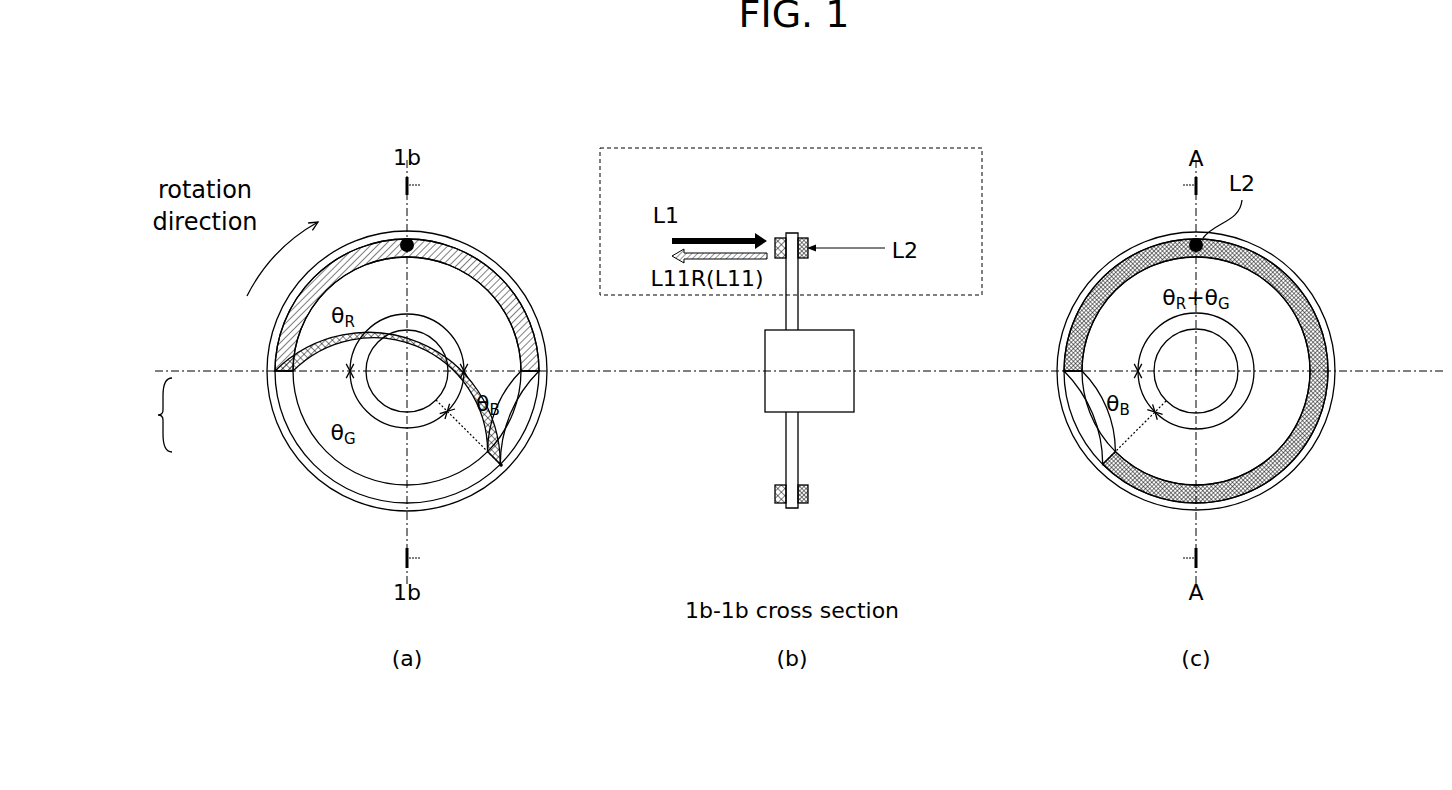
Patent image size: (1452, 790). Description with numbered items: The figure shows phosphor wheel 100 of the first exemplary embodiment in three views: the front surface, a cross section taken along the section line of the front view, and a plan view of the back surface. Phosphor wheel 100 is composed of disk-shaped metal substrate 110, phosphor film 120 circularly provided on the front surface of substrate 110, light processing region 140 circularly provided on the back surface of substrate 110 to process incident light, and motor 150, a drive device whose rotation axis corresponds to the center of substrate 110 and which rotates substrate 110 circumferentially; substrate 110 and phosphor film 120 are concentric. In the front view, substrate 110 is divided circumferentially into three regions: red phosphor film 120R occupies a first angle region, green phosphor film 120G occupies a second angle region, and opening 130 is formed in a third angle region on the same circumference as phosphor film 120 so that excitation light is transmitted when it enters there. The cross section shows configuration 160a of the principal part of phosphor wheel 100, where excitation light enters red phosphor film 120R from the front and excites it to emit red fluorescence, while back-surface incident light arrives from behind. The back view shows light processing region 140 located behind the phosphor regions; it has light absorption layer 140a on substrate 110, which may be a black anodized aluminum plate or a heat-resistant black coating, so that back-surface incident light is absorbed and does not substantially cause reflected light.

The phosphor wheel 100 is at (515, 225).
The substrate 110 is at (433, 500).
The phosphor film 120 is at (139, 415).
The red phosphor film 120R is at (280, 353).
The green phosphor film 120G is at (282, 401).
The opening 130 is at (520, 417).
The light processing region 140 is at (1298, 452).
The light absorption layer 140a is at (413, 237).
The motor 150 is at (447, 353).
The configuration of the principal part 160a is at (983, 194).